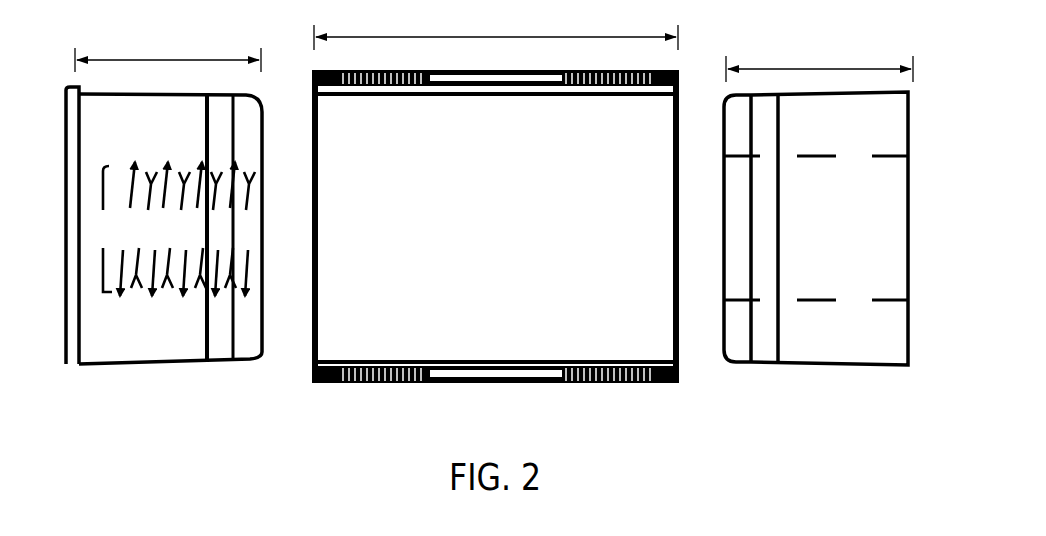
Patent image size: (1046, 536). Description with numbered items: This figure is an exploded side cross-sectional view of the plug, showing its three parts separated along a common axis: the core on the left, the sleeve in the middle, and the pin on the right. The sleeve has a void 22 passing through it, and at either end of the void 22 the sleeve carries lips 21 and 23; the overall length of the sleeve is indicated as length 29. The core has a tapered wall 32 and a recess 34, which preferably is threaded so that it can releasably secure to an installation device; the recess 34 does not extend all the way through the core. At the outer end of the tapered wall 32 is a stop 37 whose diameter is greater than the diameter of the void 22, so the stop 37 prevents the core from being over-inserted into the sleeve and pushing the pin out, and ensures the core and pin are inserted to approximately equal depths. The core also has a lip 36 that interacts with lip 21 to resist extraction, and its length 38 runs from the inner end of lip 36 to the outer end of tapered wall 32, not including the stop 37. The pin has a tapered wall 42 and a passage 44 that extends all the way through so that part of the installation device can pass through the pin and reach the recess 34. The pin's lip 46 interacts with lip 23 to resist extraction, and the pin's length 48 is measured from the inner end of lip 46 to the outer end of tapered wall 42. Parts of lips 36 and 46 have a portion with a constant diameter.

The lip 21 is at (320, 170).
The void 22 is at (483, 220).
The lip 23 is at (672, 190).
The length 29 is at (496, 30).
The tapered wall 32 is at (178, 260).
The recess 34 is at (183, 228).
The lip 36 is at (250, 359).
The stop 37 is at (68, 365).
The length 38 is at (168, 52).
The tapered wall 42 is at (798, 259).
The passage 44 is at (827, 238).
The lip 46 is at (738, 362).
The length 48 is at (819, 62).